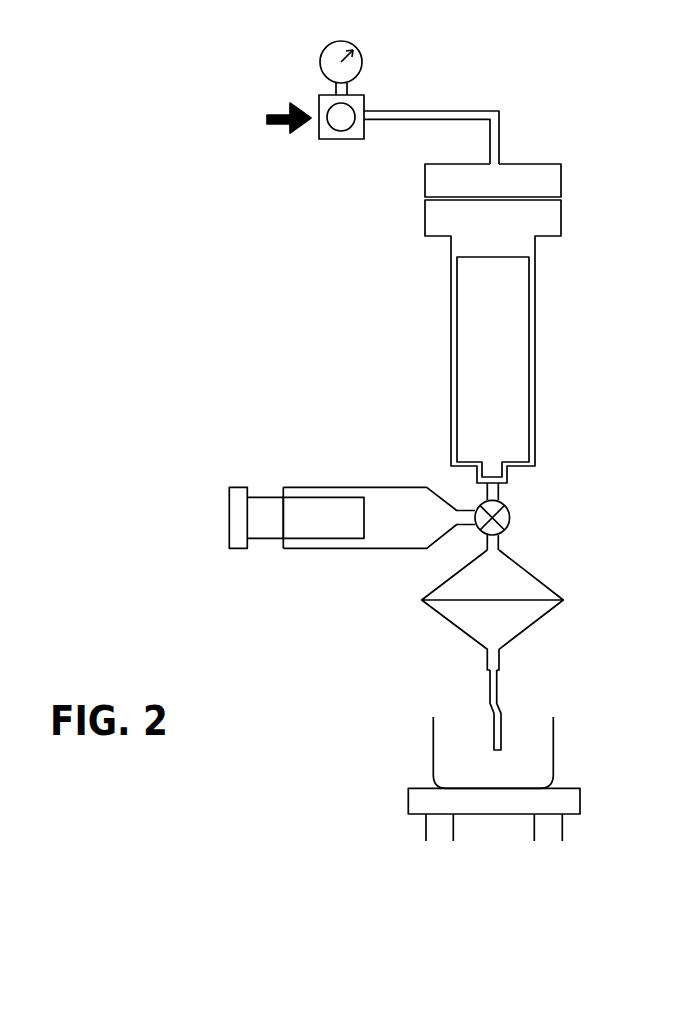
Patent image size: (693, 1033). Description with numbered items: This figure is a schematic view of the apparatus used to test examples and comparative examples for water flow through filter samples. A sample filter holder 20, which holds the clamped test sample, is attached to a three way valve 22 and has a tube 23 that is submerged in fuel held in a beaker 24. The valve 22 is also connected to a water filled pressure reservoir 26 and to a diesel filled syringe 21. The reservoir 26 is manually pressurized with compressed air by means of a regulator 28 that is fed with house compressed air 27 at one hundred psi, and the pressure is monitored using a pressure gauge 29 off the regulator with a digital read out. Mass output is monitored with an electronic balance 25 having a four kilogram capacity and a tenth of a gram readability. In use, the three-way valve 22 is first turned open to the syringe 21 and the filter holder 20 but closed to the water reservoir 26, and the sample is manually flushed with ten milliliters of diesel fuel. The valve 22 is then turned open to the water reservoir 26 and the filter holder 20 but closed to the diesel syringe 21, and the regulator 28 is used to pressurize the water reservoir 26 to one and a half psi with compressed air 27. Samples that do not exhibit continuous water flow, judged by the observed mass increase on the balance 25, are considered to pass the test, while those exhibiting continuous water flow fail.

The filter holder 20 is at (553, 590).
The syringe 21 is at (328, 487).
The three way valve 22 is at (510, 517).
The tube 23 is at (497, 692).
The beaker 24 is at (540, 750).
The electronic balance 25 is at (560, 803).
The pressure reservoir 26 is at (534, 352).
The compressed air 27 is at (270, 119).
The regulator 28 is at (339, 139).
The pressure gauge 29 is at (362, 63).